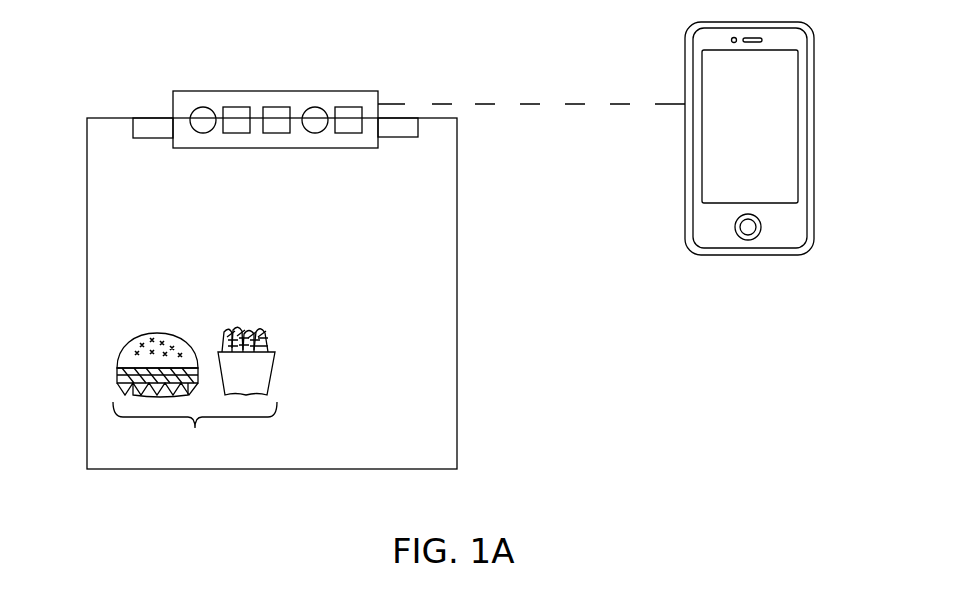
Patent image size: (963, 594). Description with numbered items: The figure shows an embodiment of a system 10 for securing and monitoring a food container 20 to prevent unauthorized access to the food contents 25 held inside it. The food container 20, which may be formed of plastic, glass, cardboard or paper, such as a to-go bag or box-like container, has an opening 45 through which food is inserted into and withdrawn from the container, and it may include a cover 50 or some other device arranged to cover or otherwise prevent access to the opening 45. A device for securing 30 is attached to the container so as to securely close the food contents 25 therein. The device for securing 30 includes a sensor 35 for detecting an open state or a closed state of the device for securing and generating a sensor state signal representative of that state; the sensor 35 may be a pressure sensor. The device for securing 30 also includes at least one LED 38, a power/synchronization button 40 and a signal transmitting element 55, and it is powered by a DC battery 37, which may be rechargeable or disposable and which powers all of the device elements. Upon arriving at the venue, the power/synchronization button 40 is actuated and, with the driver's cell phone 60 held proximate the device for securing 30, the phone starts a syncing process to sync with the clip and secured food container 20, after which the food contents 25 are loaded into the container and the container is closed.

The system 10 is at (670, 361).
The food container 20 is at (87, 312).
The food contents 25 is at (195, 428).
The device for securing 30 is at (172, 100).
The sensor 35 is at (201, 107).
The DC battery 37 is at (277, 107).
The LED 38 is at (314, 107).
The power/synchronization button 40 is at (348, 107).
The opening 45 is at (173, 117).
The cover 50 is at (140, 134).
The signal transmitting element 55 is at (237, 107).
The cell phone 60 is at (814, 134).